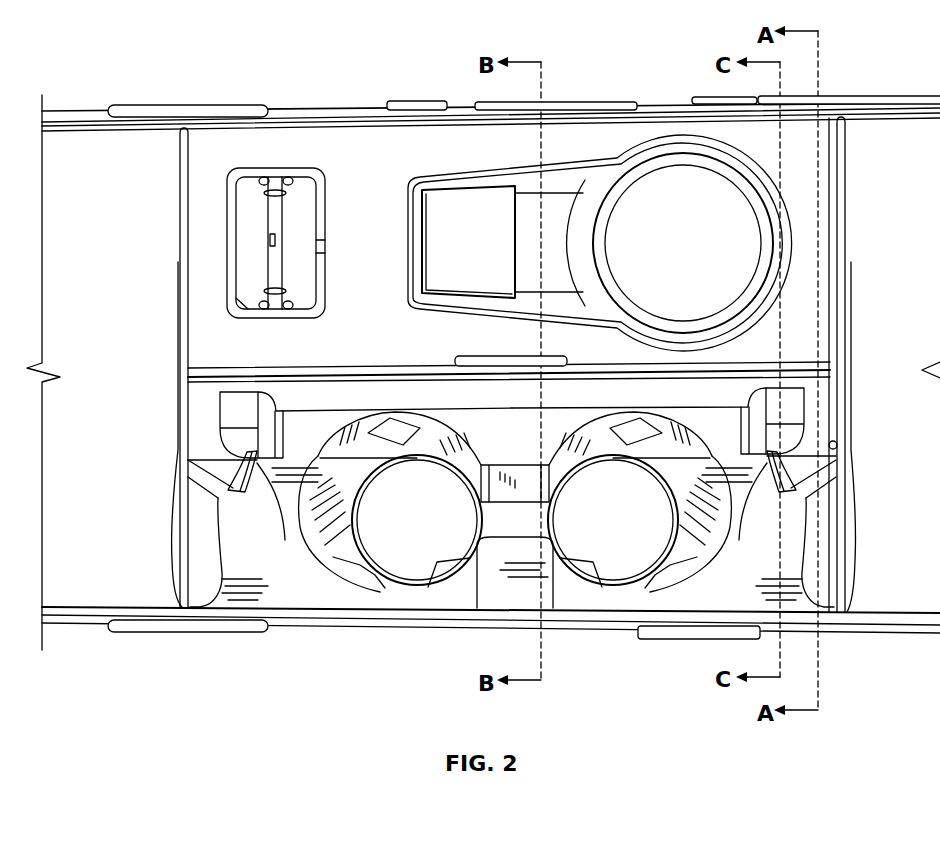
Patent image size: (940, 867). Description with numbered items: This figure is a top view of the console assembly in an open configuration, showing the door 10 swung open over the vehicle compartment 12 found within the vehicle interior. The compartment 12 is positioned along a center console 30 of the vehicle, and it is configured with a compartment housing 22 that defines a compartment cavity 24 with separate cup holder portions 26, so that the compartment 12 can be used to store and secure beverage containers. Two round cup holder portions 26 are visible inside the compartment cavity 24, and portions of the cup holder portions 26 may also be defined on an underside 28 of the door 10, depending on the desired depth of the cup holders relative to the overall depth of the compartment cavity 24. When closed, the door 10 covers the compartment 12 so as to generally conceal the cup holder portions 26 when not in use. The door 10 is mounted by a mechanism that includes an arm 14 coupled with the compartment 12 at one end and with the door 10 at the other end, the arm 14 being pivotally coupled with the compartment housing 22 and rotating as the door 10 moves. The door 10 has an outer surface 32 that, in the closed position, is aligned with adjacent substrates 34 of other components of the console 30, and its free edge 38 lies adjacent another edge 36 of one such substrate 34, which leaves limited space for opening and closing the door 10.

The door 10 is at (800, 358).
The vehicle compartment 12 is at (762, 546).
The arm 14 is at (773, 467).
The compartment housing 22 is at (812, 580).
The compartment cavity 24 is at (496, 553).
The cup holder portions 26 is at (410, 568).
The underside 28 is at (527, 393).
The center console 30 is at (124, 45).
The outer surface 32 is at (808, 340).
The substrates 34 is at (808, 233).
The edge 36 is at (333, 368).
The free edge 38 is at (223, 378).